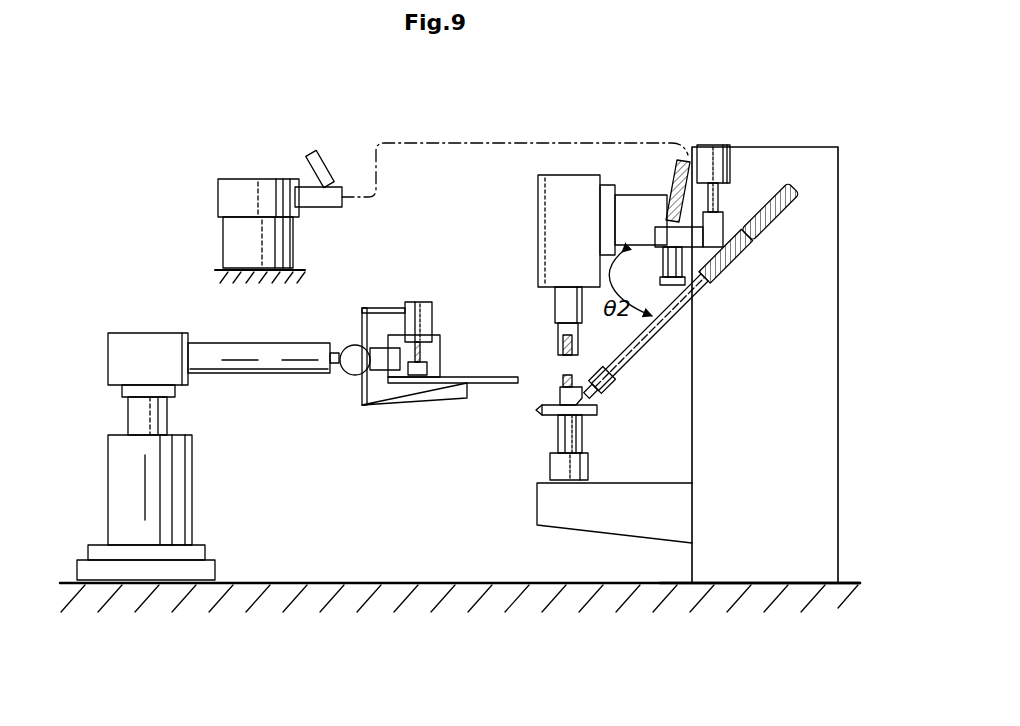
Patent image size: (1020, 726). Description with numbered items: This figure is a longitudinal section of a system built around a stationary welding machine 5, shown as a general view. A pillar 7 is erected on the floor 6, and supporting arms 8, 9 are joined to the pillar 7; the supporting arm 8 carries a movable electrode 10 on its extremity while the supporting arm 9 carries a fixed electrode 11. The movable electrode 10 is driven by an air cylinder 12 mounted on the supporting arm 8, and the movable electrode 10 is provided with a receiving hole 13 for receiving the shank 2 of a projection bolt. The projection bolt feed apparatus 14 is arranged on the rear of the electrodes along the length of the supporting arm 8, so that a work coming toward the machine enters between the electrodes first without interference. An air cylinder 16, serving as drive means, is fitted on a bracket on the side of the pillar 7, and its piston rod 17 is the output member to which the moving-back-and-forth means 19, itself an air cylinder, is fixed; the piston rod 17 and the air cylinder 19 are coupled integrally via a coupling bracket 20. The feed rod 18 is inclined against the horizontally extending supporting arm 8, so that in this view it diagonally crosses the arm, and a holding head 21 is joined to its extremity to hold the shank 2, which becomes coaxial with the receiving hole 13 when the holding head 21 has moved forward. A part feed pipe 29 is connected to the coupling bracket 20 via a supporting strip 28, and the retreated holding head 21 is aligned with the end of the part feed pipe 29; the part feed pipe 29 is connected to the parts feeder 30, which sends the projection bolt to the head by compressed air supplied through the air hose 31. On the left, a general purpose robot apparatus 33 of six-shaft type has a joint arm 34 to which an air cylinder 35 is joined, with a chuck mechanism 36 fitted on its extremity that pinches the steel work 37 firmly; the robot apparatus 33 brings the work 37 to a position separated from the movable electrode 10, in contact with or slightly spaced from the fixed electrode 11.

The shank 2 is at (567, 372).
The stationary welding machine 5 is at (610, 130).
The floor 6 is at (758, 583).
The pillar 7 is at (814, 147).
The supporting arm 8 is at (658, 197).
The supporting arm 9 is at (667, 482).
The movable electrode 10 is at (555, 302).
The fixed electrode 11 is at (557, 443).
The air cylinder 12 is at (538, 210).
The receiving hole 13 is at (560, 358).
The projection bolt feed apparatus 14 is at (728, 283).
The air cylinder 16 is at (731, 163).
The piston rod 17 is at (719, 197).
The feed rod 18 is at (618, 370).
The moving-back-and-forth means 19 is at (793, 208).
The coupling bracket 20 is at (758, 242).
The holding head 21 is at (540, 408).
The supporting strip 28 is at (655, 240).
The part feed pipe 29 is at (678, 299).
The parts feeder 30 is at (250, 178).
The air hose 31 is at (290, 130).
The robot apparatus 33 is at (125, 315).
The joint arm 34 is at (158, 333).
The air cylinder 35 is at (260, 378).
The chuck mechanism 36 is at (382, 295).
The work 37 is at (587, 420).